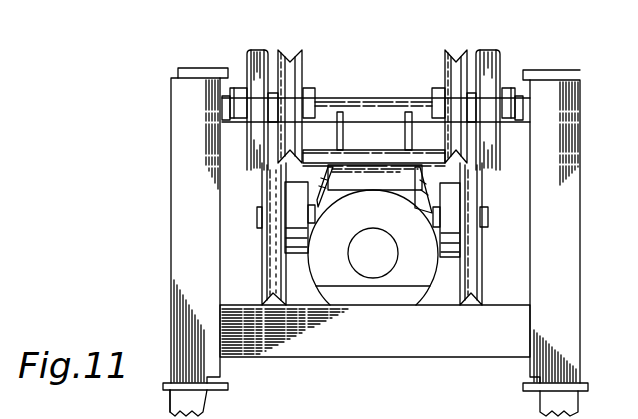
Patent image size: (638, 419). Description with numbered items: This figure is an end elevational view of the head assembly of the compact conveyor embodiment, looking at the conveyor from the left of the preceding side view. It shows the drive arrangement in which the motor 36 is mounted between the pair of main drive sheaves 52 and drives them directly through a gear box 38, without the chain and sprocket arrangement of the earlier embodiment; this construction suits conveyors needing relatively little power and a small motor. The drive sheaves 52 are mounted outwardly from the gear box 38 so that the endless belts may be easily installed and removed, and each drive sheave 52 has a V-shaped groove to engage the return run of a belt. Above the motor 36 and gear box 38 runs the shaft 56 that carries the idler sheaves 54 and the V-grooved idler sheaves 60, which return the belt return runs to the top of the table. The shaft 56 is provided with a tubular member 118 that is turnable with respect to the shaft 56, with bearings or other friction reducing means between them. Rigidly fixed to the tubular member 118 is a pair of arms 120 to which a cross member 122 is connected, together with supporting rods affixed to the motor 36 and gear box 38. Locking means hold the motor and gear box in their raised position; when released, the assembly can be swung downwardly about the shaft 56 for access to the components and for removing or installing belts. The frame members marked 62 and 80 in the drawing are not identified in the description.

The motor 36 is at (378, 268).
The gear box 38 is at (374, 189).
The main drive sheaves 52 is at (263, 303).
The idler sheaves 54 is at (257, 53).
The shaft 56 is at (228, 88).
The idler sheaves 60 is at (305, 76).
The base beam 62 is at (375, 362).
The base plate 80 is at (341, 364).
The tubular member 118 is at (365, 98).
The arms 120 is at (402, 132).
The cross member 122 is at (420, 170).